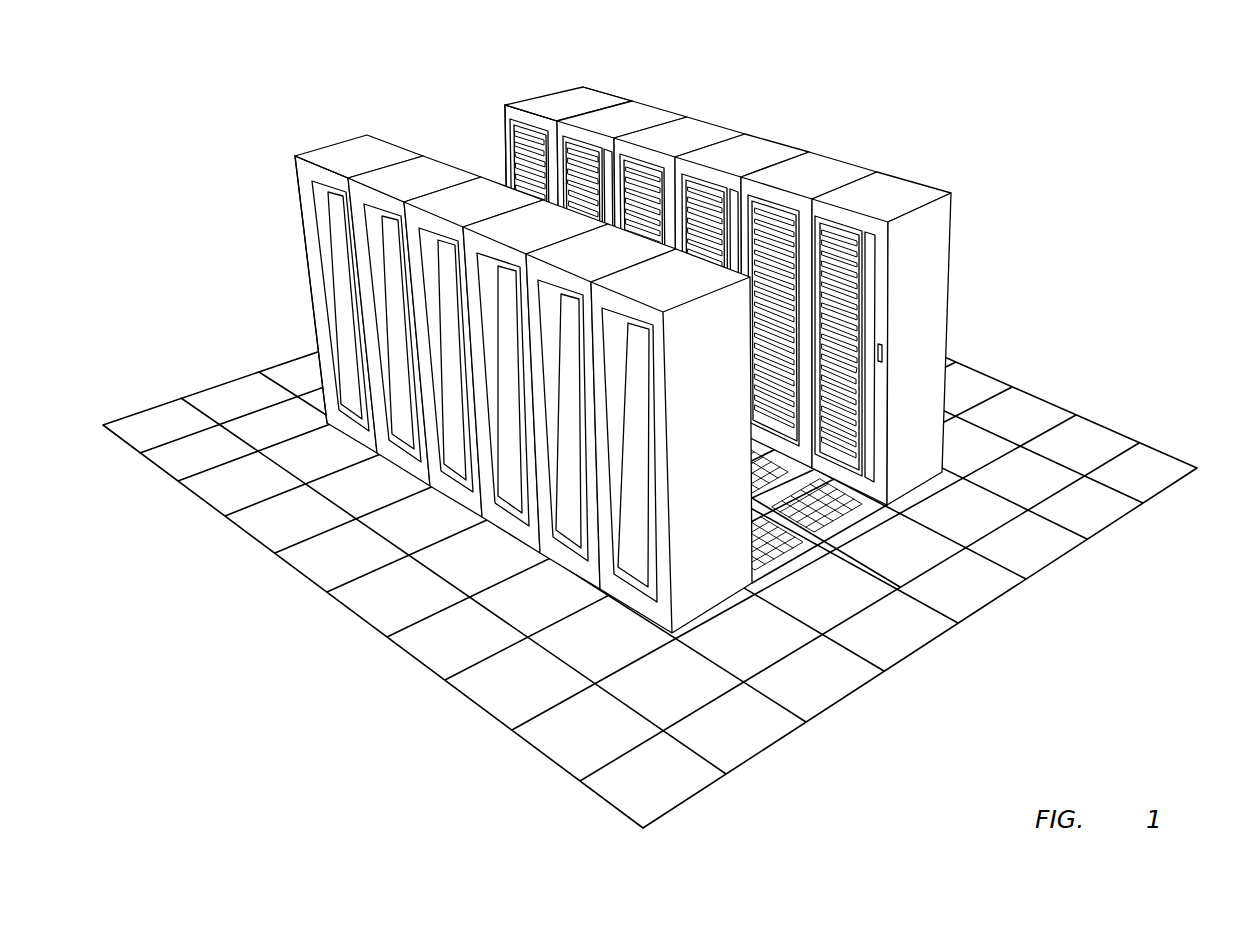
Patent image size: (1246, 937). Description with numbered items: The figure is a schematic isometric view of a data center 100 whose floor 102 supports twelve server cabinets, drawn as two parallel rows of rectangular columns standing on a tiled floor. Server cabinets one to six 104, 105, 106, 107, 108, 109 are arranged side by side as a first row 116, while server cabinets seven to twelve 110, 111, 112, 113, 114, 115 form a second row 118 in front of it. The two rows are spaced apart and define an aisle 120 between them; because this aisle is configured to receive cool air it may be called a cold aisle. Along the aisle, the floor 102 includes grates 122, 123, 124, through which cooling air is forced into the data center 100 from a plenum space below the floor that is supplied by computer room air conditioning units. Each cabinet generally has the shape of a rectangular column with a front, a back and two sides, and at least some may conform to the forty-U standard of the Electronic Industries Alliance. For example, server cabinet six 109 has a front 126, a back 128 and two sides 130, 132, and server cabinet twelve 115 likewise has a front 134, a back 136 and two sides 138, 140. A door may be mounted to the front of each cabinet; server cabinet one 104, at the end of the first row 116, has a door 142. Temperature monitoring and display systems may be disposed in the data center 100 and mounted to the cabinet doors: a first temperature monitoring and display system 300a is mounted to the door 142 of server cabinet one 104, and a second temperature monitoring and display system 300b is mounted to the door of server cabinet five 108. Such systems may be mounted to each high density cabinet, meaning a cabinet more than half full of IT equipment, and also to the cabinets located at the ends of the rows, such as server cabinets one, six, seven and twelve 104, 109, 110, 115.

The data center 100 is at (667, 419).
The floor 102 is at (1145, 462).
The server cabinet one 104 is at (918, 324).
The server cabinet two 105 is at (835, 180).
The server cabinet three 106 is at (782, 160).
The server cabinet four 107 is at (725, 145).
The server cabinet five 108 is at (675, 210).
The server cabinet six 109 is at (568, 183).
The server cabinet seven 110 is at (666, 614).
The server cabinet eight 111 is at (600, 573).
The server cabinet nine 112 is at (537, 530).
The server cabinet ten 113 is at (478, 497).
The server cabinet eleven 114 is at (414, 317).
The server cabinet twelve 115 is at (335, 289).
The first row 116 is at (728, 258).
The second row 118 is at (483, 353).
The aisle 120 is at (436, 102).
The grate 122 is at (858, 513).
The grate 123 is at (792, 552).
The grate 124 is at (800, 470).
The front 126 is at (503, 112).
The back 128 is at (597, 88).
The side 130 is at (572, 116).
The side 132 is at (580, 85).
The front 134 is at (388, 146).
The back 136 is at (298, 166).
The side 138 is at (378, 166).
The side 140 is at (345, 165).
The door 142 is at (950, 212).
The first temperature monitoring and display system 300a is at (878, 318).
The second temperature monitoring and display system 300b is at (612, 150).